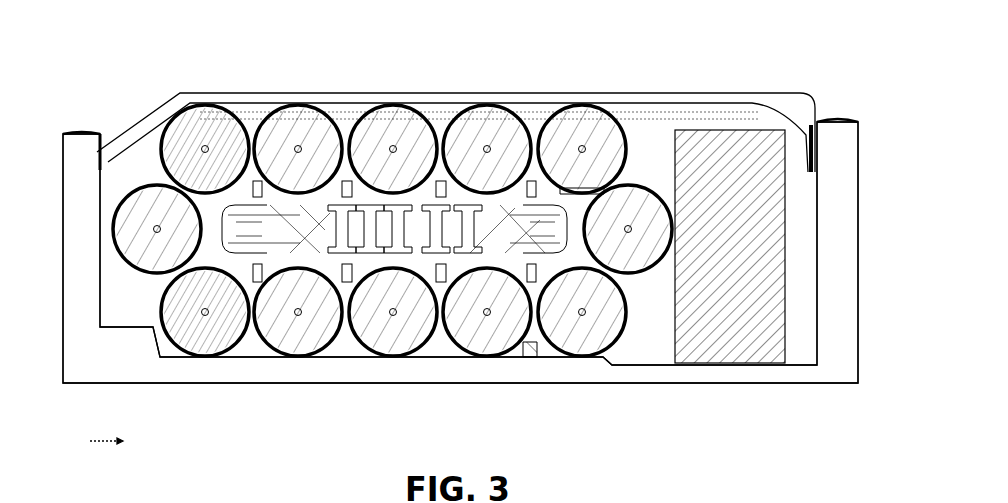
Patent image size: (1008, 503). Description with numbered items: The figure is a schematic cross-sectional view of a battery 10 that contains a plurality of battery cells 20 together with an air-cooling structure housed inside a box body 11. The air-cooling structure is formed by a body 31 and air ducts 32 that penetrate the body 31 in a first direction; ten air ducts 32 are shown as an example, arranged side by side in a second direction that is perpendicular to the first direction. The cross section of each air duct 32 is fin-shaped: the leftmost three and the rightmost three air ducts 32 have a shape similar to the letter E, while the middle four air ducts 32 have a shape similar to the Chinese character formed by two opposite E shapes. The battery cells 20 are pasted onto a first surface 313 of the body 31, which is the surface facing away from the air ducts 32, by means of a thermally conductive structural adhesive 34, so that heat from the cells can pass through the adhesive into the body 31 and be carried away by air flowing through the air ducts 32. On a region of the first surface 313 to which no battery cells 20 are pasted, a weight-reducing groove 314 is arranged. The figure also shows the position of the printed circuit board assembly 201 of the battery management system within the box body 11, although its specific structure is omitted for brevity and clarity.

The battery 10 is at (89, 50).
The box body 11 is at (133, 352).
The battery cells 20 is at (330, 372).
The body 31 is at (531, 345).
The air duct 32 is at (250, 343).
The thermally conductive structural adhesive 34 is at (573, 190).
The printed circuit board assembly 201 is at (697, 298).
The first surface 313 is at (566, 277).
The weight-reducing groove 314 is at (360, 100).